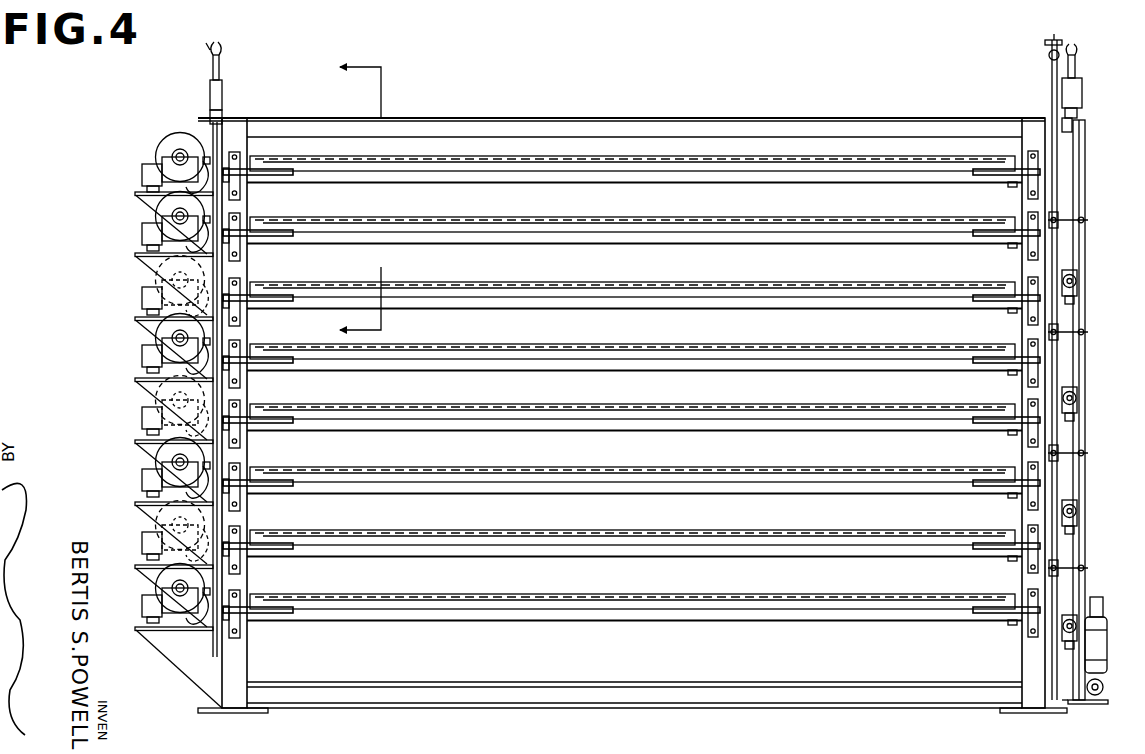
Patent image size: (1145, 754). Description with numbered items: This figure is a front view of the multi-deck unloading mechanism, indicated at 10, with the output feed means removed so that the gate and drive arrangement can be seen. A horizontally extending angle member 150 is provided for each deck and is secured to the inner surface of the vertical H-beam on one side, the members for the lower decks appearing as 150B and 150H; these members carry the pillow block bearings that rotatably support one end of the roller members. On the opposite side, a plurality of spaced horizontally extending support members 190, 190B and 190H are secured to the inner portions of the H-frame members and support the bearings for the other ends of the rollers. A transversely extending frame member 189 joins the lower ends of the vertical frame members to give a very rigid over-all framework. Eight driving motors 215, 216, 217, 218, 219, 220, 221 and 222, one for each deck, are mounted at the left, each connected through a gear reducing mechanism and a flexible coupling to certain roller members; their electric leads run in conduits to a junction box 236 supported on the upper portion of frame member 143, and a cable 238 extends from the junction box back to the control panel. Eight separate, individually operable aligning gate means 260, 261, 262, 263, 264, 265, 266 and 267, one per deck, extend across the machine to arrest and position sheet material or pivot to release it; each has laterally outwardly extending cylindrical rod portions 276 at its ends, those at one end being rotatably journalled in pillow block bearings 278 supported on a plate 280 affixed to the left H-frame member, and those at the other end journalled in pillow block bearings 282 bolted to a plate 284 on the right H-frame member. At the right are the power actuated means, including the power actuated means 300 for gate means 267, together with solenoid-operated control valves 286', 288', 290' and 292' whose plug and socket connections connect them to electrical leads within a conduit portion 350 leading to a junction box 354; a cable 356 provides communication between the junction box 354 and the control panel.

The apparatus section 10 is at (342, 188).
The frame member 143 is at (207, 118).
The horizontal angle member 150 is at (253, 188).
The tray 150B is at (258, 249).
The tray 150H is at (258, 626).
The transversely extending frame member 189 is at (582, 694).
The horizontally extending support member 190 is at (1012, 188).
The tray end 190B is at (1010, 250).
The tray end 190H is at (1010, 631).
The driving motor 215 is at (157, 137).
The driving motor 216 is at (155, 204).
The driving motor 217 is at (156, 264).
The driving motor 218 is at (156, 328).
The driving motor 219 is at (158, 388).
The driving motor 220 is at (156, 450).
The driving motor 221 is at (160, 514).
The driving motor 222 is at (155, 578).
The junction box 236 is at (223, 88).
The cable 238 is at (221, 52).
The aligning gate means 260 is at (753, 147).
The aligning gate means 261 is at (750, 198).
The aligning gate means 262 is at (750, 262).
The aligning gate means 263 is at (750, 320).
The aligning gate means 264 is at (750, 382).
The aligning gate means 265 is at (750, 445).
The aligning gate means 266 is at (750, 505).
The aligning gate means 267 is at (750, 570).
The cylindrical rod portion 276 is at (284, 176).
The pillow block bearing 278 is at (238, 163).
The plate 280 is at (240, 120).
The pillow block bearing 282 is at (1030, 163).
The plate 284 is at (1040, 118).
The control valve 286' is at (1091, 203).
The control valve 288' is at (1091, 317).
The control valve 290' is at (1091, 435).
The control valve 292' is at (1090, 547).
The power actuated means 300 is at (1110, 658).
The conduit portion 350 is at (1051, 68).
The junction box 354 is at (1078, 90).
The cable 356 is at (1076, 60).